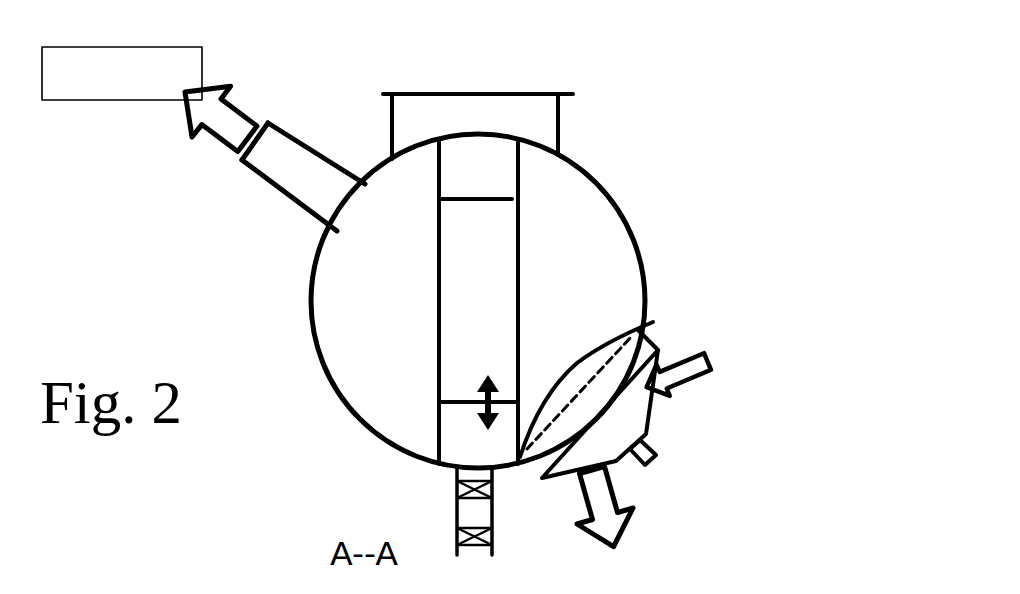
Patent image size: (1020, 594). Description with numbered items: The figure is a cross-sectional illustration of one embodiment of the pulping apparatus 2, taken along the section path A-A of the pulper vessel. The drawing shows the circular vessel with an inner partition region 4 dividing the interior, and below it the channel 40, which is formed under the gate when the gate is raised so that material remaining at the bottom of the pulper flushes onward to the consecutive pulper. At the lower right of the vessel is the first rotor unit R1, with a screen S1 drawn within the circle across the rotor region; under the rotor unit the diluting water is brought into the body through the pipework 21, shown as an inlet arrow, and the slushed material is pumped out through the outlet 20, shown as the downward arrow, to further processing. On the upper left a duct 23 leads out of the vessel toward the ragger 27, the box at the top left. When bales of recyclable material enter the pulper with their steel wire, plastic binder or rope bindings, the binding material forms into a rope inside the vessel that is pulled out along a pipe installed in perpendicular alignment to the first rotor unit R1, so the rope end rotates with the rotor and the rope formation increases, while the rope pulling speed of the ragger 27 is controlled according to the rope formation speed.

The drum mounting frame 2 is at (510, 87).
The inner compartment 4 is at (468, 198).
The channel 40 is at (465, 437).
The screen S1 is at (535, 285).
The first rotor unit R1 is at (623, 432).
The pipework 21 is at (717, 353).
The outlet 20 is at (598, 500).
The exhaust duct 23 is at (252, 172).
The ragger 27 is at (110, 96).